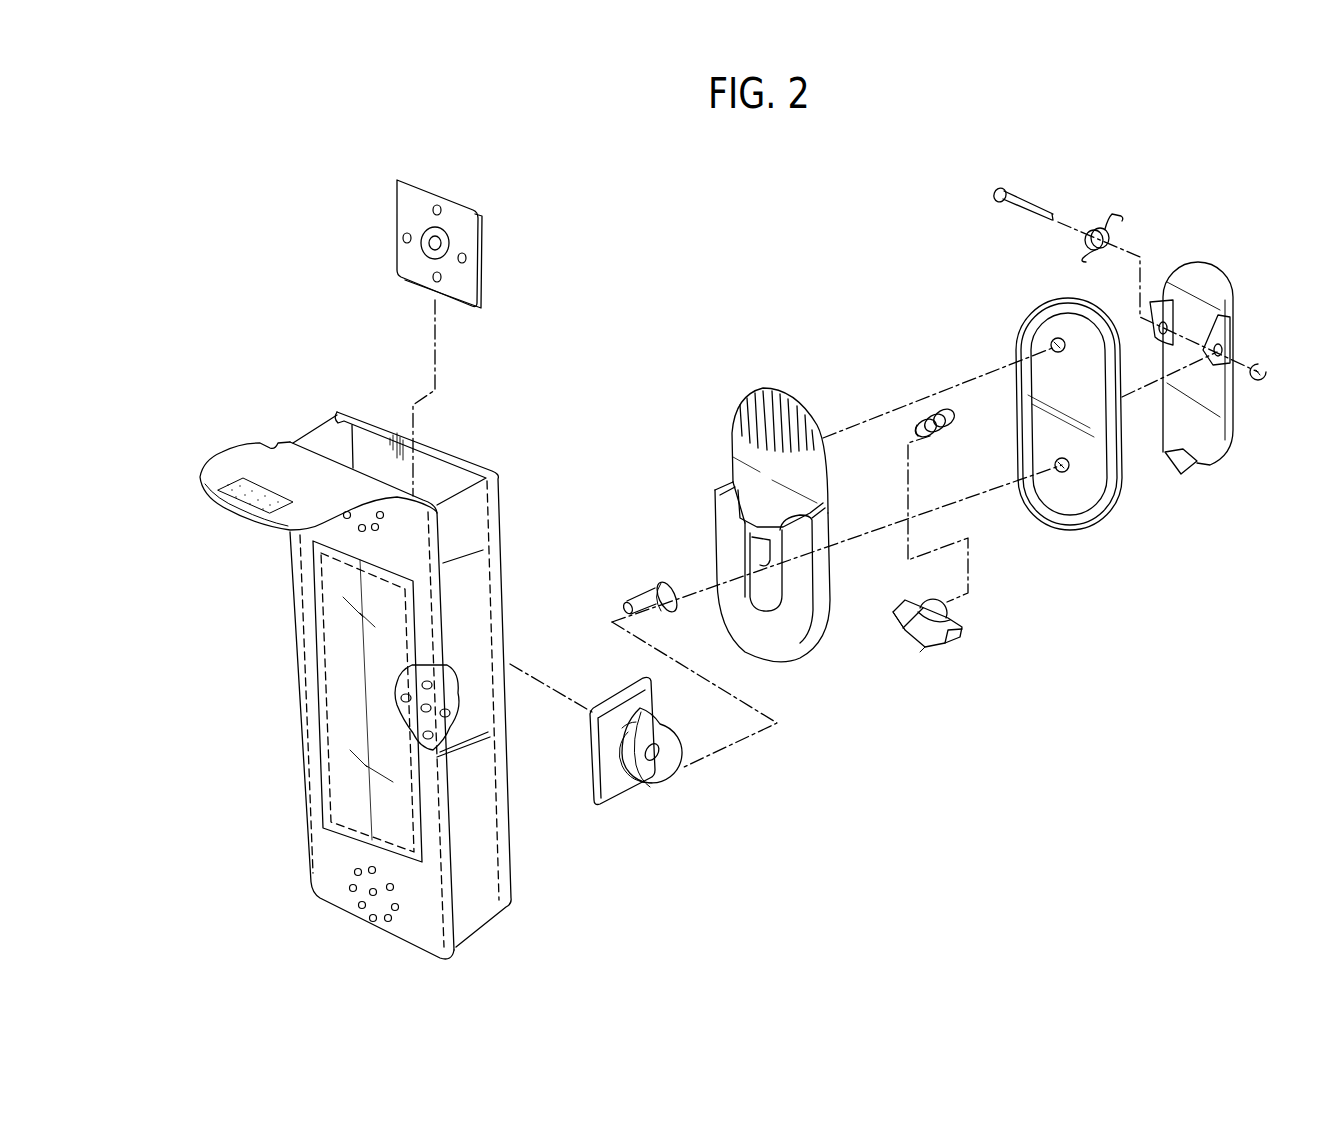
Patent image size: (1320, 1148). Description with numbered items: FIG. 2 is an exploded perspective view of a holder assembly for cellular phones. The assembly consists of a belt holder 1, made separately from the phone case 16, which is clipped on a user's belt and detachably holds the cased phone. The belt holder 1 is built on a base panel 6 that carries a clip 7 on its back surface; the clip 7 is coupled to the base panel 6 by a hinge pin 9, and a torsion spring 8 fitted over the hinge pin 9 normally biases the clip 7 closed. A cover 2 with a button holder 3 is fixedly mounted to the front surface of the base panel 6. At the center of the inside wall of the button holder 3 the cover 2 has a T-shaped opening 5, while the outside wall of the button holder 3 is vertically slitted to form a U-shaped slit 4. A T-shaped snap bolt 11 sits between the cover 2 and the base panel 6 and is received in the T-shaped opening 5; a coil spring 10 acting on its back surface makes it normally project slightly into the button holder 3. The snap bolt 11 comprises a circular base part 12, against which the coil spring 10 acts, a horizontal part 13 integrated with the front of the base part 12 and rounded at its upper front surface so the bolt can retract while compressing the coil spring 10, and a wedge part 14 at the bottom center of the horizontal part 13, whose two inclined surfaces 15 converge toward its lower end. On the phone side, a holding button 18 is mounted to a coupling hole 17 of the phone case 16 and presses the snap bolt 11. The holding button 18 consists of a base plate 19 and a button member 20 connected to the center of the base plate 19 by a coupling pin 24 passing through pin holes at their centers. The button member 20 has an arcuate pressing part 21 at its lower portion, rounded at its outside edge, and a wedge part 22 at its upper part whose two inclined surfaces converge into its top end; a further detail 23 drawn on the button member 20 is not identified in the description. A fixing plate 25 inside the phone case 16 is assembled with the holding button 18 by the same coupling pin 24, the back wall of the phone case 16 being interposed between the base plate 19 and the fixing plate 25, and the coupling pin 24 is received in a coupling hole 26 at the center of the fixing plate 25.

The belt holder 1 is at (897, 247).
The cover 2 is at (786, 392).
The button holder 3 is at (800, 607).
The U-shaped slit 4 is at (770, 588).
The T-shaped opening 5 is at (730, 450).
The base panel 6 is at (1122, 497).
The clip 7 is at (1220, 462).
The torsion spring 8 is at (1097, 227).
The hinge pin 9 is at (1018, 200).
The coil spring 10 is at (927, 400).
The T-shaped snap bolt 11 is at (942, 594).
The circular base part 12 is at (948, 600).
The horizontal part 13 is at (963, 633).
The wedge part 14 is at (917, 655).
The inclined surfaces 15 is at (907, 633).
The phone case 16 is at (310, 875).
The coupling hole 17 is at (393, 700).
The holding button 18 is at (682, 699).
The base plate 19 is at (607, 718).
The button member 20 is at (682, 748).
The pressing part 21 is at (648, 783).
The wedge part 22 is at (643, 737).
The nut collar 23 is at (648, 767).
The coupling pin 24 is at (638, 598).
The fixing plate 25 is at (393, 207).
The coupling hole 26 is at (428, 243).